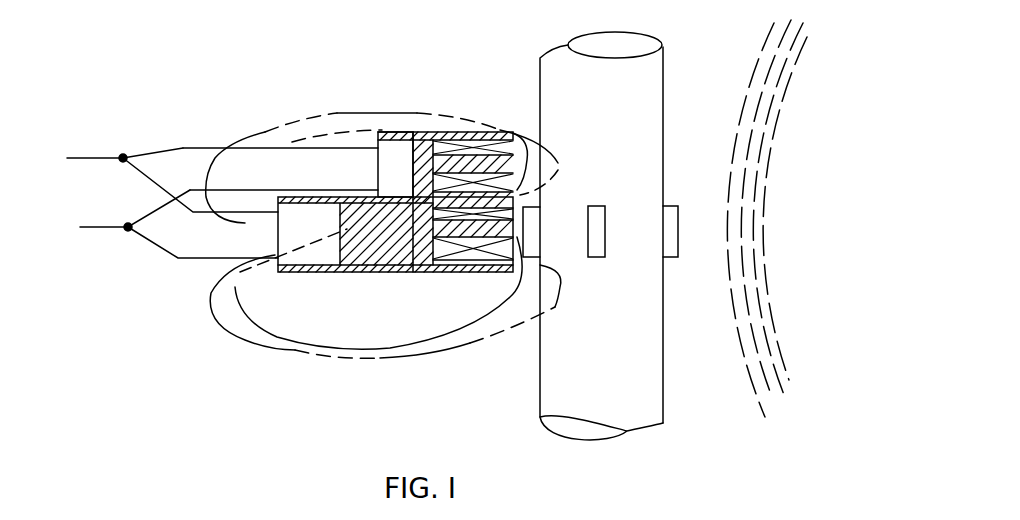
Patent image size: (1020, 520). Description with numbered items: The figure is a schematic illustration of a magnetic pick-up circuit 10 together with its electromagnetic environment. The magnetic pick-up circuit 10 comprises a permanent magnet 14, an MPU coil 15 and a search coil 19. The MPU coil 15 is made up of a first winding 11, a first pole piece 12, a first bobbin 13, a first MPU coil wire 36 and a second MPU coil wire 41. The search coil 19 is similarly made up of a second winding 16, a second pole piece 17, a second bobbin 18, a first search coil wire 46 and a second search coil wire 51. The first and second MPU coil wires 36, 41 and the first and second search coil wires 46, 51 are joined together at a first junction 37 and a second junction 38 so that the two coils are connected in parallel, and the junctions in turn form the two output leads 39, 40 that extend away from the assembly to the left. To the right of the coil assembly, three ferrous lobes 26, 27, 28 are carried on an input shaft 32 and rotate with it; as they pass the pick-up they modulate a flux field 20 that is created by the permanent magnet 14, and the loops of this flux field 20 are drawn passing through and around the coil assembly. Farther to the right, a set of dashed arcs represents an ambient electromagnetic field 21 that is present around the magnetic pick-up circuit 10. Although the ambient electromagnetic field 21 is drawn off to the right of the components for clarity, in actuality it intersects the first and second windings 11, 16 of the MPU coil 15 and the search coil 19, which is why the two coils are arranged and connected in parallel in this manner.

The magnetic pick-up circuit 10 is at (348, 108).
The first winding 11 is at (475, 272).
The first pole piece 12 is at (422, 252).
The first bobbin 13 is at (430, 273).
The permanent magnet 14 is at (335, 272).
The MPU coil 15 is at (435, 297).
The second winding 16 is at (478, 133).
The second pole piece 17 is at (402, 133).
The second bobbin 18 is at (425, 137).
The search coil 19 is at (447, 108).
The flux field 20 is at (270, 346).
The ambient electromagnetic field 21 is at (770, 153).
The ferrous lobe 26 is at (533, 220).
The ferrous lobe 27 is at (597, 223).
The ferrous lobe 28 is at (673, 220).
The input shaft 32 is at (640, 402).
The first MPU coil wire 36 is at (187, 260).
The first junction 37 is at (127, 230).
The second junction 38 is at (123, 154).
The lead 39 is at (98, 230).
The lead 40 is at (95, 164).
The second MPU coil wire 41 is at (222, 225).
The first search coil wire 46 is at (222, 225).
The second search coil wire 51 is at (262, 147).